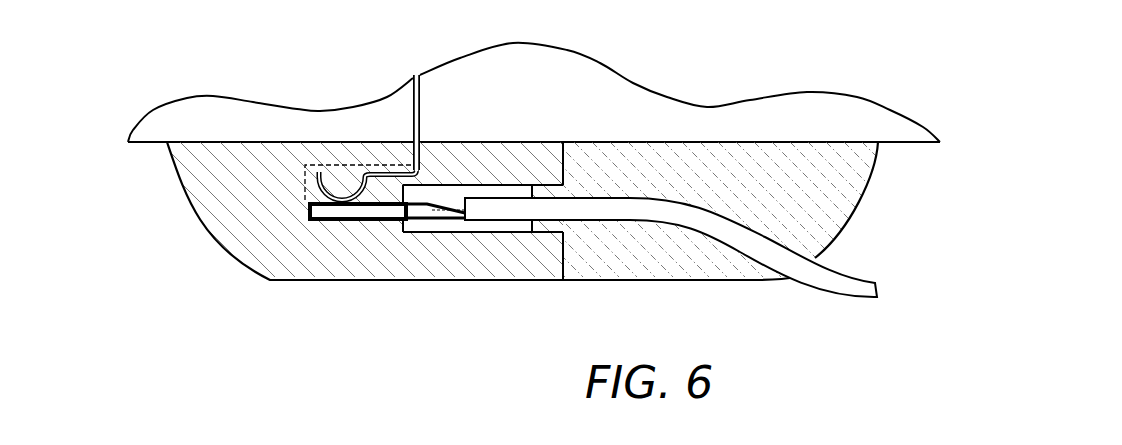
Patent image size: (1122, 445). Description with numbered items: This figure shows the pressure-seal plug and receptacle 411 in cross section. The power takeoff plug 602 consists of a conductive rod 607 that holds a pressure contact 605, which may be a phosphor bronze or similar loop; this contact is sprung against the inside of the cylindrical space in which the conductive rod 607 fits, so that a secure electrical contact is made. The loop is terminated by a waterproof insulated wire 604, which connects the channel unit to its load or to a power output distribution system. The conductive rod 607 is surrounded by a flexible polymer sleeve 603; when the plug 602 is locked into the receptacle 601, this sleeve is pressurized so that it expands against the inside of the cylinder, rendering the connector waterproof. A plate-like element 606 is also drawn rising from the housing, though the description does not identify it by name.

The pressure-seal plug and receptacle 411 is at (228, 311).
The receptacle 601 is at (220, 257).
The plug 602 is at (700, 283).
The flexible polymer sleeve 603 is at (517, 224).
The waterproof insulated wire 604 is at (453, 205).
The pressure contact 605 is at (347, 180).
The plate 606 is at (410, 102).
The conductive rod 607 is at (356, 212).